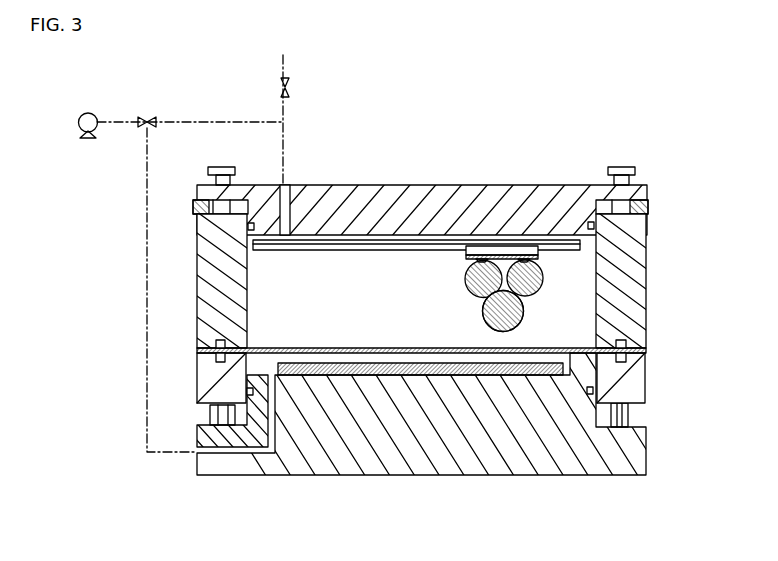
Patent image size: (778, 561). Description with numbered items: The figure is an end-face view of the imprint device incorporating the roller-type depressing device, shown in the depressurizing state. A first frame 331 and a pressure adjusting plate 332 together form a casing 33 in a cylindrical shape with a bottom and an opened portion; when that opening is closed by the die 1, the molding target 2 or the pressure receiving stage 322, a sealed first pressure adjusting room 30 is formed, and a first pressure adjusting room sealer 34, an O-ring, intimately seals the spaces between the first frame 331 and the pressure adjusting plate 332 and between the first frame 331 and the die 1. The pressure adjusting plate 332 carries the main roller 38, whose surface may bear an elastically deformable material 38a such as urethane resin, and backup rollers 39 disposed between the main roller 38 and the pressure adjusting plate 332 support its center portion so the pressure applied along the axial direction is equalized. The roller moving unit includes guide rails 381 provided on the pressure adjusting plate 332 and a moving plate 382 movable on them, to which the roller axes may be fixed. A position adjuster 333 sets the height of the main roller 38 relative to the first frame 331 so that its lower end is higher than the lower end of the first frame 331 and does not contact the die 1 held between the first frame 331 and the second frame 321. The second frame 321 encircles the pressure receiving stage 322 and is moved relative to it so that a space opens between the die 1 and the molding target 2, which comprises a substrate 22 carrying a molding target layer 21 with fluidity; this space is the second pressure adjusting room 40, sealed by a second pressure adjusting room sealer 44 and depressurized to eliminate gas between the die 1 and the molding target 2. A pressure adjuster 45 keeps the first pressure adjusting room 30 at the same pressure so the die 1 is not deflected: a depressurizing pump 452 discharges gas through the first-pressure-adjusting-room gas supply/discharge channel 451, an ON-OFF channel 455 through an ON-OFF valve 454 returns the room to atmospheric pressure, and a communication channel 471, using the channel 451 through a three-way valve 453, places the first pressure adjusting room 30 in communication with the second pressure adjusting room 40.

The die 1 is at (575, 377).
The molding target 2 is at (373, 380).
The molding target layer 21 is at (398, 376).
The substrate 22 is at (433, 376).
The first pressure adjusting room 30 is at (362, 272).
The casing 33 is at (401, 238).
The first pressure adjusting room sealer 34 is at (594, 228).
The main roller 38 is at (503, 332).
The elastically deformable material 38a is at (526, 332).
The backup rollers 39 is at (481, 261).
The second pressure adjusting room 40 is at (465, 358).
The second pressure adjusting room sealer 44 is at (246, 392).
The pressure adjuster 45 is at (71, 124).
The second frame 321 is at (218, 393).
The pressure receiving stage 322 is at (296, 402).
The first frame 331 is at (647, 227).
The pressure adjusting plate 332 is at (400, 205).
The position adjuster 333 is at (648, 208).
The guide rails 381 is at (450, 245).
The moving plate 382 is at (482, 257).
The first-pressure-adjusting-room gas supply/discharge channel 451 is at (212, 117).
The depressurizing pump 452 is at (88, 138).
The three-way valve 453 is at (147, 116).
The ON-OFF valve 454 is at (290, 90).
The ON-OFF channel 455 is at (288, 108).
The communication channel 471 is at (146, 215).